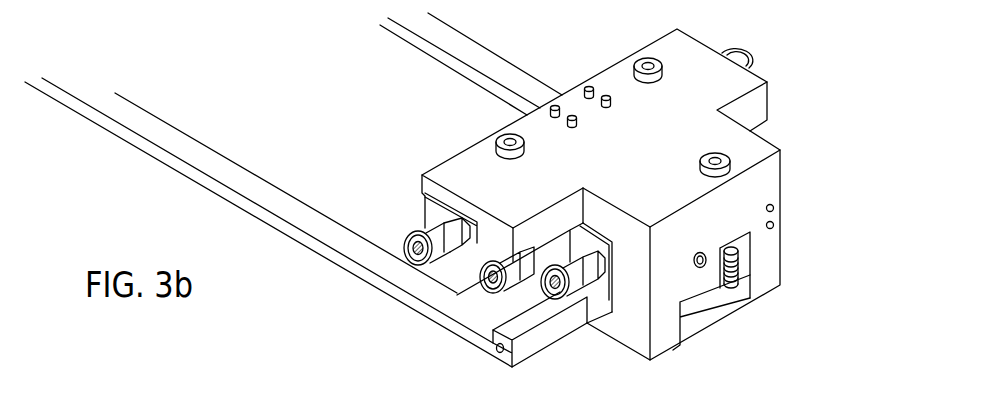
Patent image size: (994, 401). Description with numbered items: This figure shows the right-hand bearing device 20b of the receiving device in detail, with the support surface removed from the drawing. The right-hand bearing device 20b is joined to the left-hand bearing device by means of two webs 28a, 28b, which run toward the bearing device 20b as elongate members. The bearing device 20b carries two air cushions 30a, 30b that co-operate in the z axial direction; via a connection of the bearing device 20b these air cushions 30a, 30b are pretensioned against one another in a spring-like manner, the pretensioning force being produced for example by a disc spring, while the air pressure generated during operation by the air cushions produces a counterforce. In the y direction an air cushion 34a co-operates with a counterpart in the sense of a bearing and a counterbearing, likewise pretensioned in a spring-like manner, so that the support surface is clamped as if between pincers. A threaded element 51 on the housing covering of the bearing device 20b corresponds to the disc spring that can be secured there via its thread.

The right-hand bearing device 20b is at (755, 192).
The web 28a is at (513, 78).
The web 28b is at (235, 178).
The air cushion 30a is at (433, 212).
The air cushion 30b is at (533, 275).
The air cushion 34a is at (600, 292).
The spring-loaded screw 51 is at (732, 277).